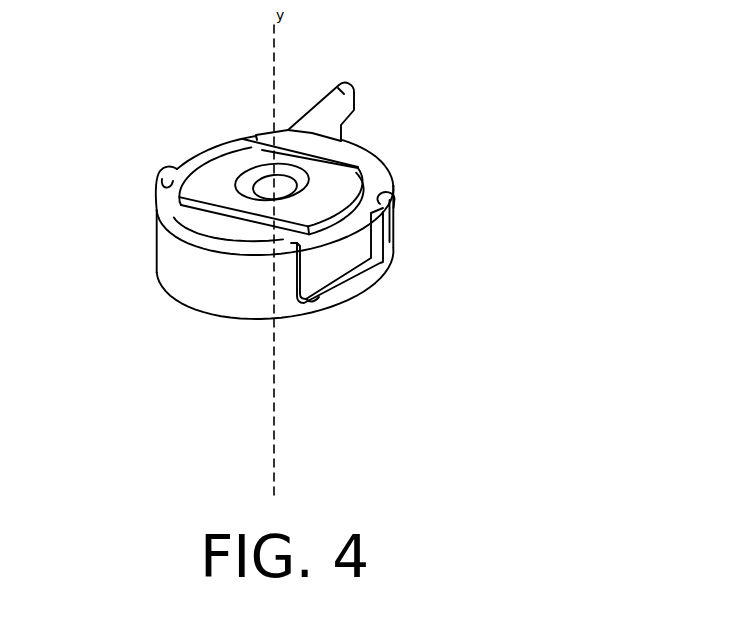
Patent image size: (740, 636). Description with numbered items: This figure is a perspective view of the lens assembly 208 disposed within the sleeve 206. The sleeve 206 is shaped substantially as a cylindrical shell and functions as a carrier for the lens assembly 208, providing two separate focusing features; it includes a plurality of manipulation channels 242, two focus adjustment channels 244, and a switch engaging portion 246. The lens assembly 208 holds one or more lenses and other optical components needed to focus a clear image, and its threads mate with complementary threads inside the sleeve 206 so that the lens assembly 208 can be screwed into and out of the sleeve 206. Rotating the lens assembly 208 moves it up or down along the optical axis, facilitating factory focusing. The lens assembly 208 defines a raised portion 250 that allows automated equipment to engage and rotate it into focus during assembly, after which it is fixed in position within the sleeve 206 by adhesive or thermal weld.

The sleeve 206 is at (237, 268).
The lens assembly 208 is at (238, 225).
The manipulation channels 242 is at (158, 191).
The focus adjustment channels 244 is at (338, 244).
The switch engaging portion 246 is at (343, 85).
The raised portion 250 is at (226, 164).